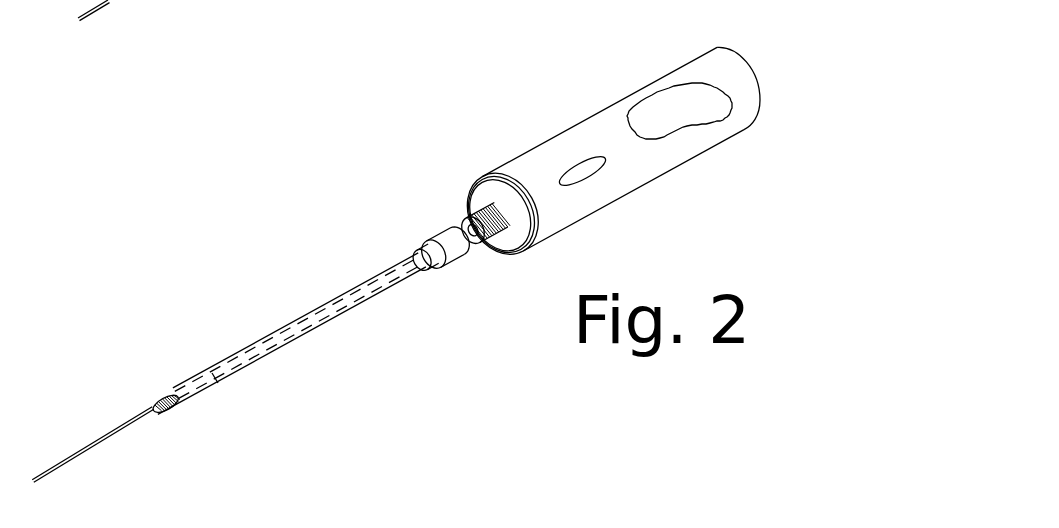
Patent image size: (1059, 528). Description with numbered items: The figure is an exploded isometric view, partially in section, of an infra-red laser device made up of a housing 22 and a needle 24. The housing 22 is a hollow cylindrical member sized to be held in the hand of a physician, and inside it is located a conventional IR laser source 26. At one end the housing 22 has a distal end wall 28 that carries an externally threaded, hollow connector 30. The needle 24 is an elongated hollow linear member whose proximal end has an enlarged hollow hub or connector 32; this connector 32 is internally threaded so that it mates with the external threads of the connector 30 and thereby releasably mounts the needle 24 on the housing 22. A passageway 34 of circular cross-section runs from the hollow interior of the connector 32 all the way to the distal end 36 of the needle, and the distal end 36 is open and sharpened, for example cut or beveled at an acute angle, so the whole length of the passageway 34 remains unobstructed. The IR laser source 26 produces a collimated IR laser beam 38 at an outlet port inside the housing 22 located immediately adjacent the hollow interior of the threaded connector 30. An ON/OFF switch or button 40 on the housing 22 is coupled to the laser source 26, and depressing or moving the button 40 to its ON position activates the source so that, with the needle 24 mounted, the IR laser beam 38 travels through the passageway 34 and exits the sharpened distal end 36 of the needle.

The housing 22 is at (621, 168).
The needle 24 is at (292, 334).
The IR laser source 26 is at (696, 70).
The distal end wall 28 is at (502, 182).
The connector 30 is at (484, 273).
The hub or connector 32 is at (406, 237).
The passageway 34 is at (219, 418).
The distal end 36 is at (182, 366).
The IR laser beam 38 is at (256, 249).
The ON/OFF switch or button 40 is at (588, 120).